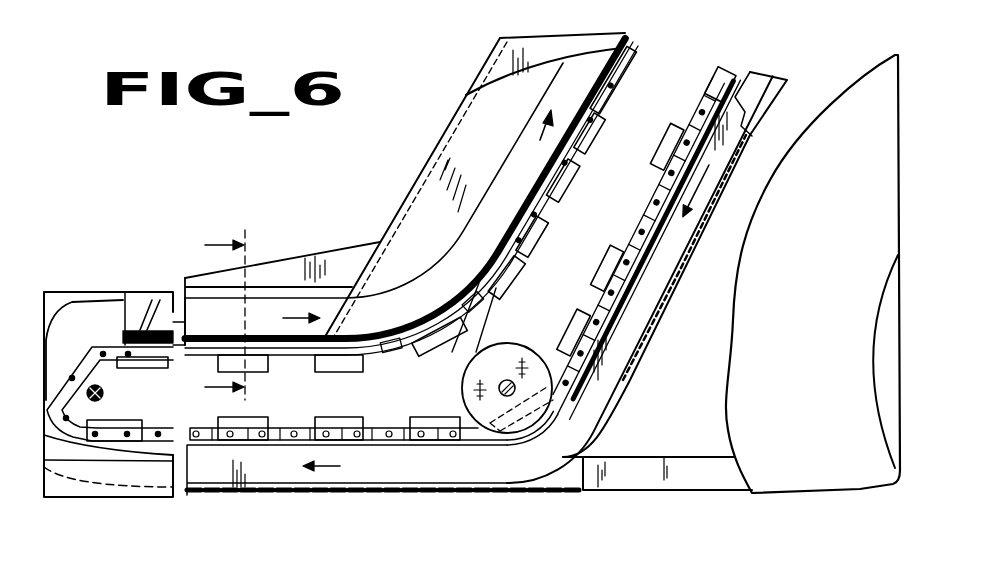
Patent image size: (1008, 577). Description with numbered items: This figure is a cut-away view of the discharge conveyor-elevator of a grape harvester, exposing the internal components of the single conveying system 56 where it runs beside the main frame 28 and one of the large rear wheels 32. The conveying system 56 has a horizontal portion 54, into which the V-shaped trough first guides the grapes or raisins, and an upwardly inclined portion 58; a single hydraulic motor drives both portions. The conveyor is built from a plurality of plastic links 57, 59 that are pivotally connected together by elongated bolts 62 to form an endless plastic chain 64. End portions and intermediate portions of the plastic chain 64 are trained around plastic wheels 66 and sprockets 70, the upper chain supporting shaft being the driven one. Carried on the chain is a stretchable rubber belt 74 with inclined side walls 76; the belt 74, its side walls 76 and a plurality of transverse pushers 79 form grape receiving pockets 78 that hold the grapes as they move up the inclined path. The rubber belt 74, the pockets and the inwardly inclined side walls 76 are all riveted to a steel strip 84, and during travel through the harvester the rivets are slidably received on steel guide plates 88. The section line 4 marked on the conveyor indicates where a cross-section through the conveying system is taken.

The section line 4- 4 is at (235, 316).
The main frame 28 is at (622, 440).
The rear wheel 32 is at (827, 248).
The horizontal portion 54 is at (128, 330).
The single conveying system 56 is at (423, 161).
The plastic link 57 is at (583, 132).
The upwardly inclined portion 58 is at (628, 44).
The plastic link 59 is at (655, 170).
The elongated bolt 62 is at (637, 232).
The endless plastic chain 64 is at (722, 72).
The plastic wheel 66 is at (472, 373).
The sprocket 70 is at (142, 406).
The stretchable rubber belt 74 is at (197, 307).
The inclined side wall 76 is at (210, 308).
The grape receiving pocket 78 is at (333, 307).
The transverse pusher 79 is at (255, 310).
The steel strip 84 is at (343, 417).
The steel guide plate 88 is at (479, 283).